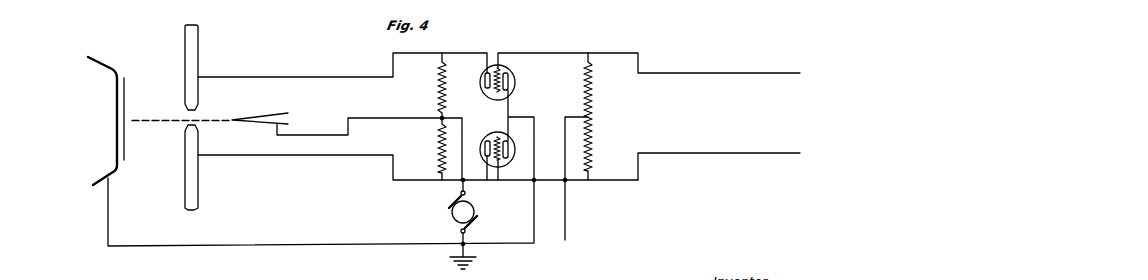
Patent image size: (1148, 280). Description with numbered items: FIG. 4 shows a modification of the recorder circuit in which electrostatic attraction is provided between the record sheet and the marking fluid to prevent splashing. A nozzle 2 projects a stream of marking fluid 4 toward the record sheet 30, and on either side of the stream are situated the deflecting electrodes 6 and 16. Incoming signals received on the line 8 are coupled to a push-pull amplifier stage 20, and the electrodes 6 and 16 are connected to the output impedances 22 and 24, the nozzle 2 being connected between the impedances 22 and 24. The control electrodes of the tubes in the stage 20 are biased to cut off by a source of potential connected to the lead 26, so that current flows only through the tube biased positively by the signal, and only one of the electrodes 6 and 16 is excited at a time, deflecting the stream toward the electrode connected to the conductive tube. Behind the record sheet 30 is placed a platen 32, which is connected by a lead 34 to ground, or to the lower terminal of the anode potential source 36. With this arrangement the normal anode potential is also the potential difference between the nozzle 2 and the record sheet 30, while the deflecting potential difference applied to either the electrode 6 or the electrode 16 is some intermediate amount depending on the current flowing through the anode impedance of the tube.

The nozzle 2 is at (347, 139).
The stream of marking fluid 4 is at (181, 113).
The electrode 6 is at (411, 167).
The line 8 is at (730, 74).
The electrode 16 is at (336, 67).
The push-pull amplifier stage 20 is at (640, 107).
The output impedance 22 is at (432, 149).
The output impedance 24 is at (431, 85).
The lead 26 is at (576, 185).
The record sheet 30 is at (127, 83).
The platen 32 is at (89, 59).
The lead 34 is at (321, 212).
The anode potential source 36 is at (475, 210).